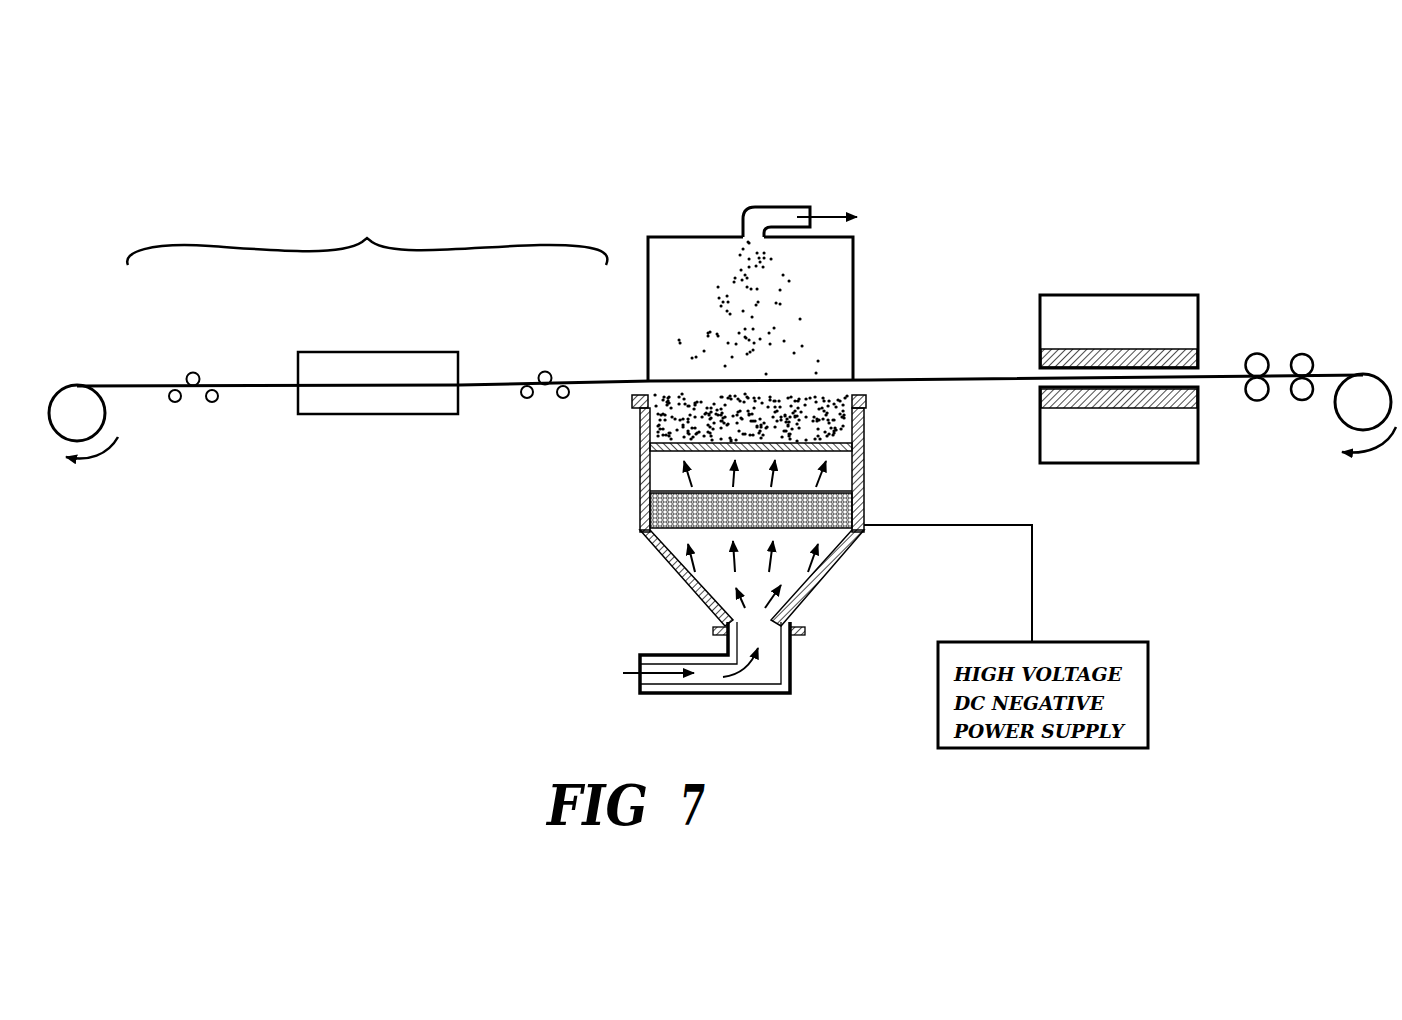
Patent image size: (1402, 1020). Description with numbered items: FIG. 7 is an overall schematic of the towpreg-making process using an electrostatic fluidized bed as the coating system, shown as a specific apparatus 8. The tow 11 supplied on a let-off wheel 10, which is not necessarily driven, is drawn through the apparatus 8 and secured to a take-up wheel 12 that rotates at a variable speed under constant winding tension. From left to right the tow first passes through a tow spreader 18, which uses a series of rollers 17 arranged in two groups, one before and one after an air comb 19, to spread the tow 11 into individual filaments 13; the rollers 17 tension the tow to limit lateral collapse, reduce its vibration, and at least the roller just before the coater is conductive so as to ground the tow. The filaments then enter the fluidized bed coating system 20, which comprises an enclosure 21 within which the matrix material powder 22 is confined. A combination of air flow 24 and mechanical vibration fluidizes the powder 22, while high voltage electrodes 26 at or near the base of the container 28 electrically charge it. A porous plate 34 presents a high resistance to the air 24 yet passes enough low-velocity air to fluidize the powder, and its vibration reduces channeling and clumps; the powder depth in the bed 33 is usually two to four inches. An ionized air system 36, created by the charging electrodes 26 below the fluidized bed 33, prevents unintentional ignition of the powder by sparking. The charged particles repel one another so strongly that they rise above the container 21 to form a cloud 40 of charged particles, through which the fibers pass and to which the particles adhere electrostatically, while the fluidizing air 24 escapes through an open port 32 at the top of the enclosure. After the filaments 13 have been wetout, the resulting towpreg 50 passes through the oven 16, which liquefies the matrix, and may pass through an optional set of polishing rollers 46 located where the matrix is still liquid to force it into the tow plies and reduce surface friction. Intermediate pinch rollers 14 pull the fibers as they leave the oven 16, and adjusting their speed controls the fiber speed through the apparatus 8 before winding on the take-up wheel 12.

The apparatus 8 is at (268, 124).
The let-off wheel 10 is at (75, 402).
The tow 11 is at (121, 381).
The take-up wheel 12 is at (1368, 398).
The individual filaments 13 is at (286, 385).
The intermediate pinch rollers 14 is at (1300, 401).
The oven 16 is at (1132, 294).
The rollers 17 is at (191, 373).
The tow spreader 18 is at (367, 237).
The air comb 19 is at (416, 418).
The fluidized bed coating system 20 is at (761, 157).
The enclosure 21 is at (631, 428).
The matrix material powder 22 is at (861, 420).
The air flow 24 is at (717, 580).
The high voltage electrodes 26 is at (861, 503).
The container 28 is at (830, 580).
The open port 32 is at (826, 207).
The fluidized bed 33 is at (692, 438).
The porous plate 34 is at (671, 472).
The ionized air system 36 is at (837, 484).
The cloud of charged particles 40 is at (834, 308).
The polishing rollers 46 is at (1261, 353).
The towpreg 50 is at (1310, 354).